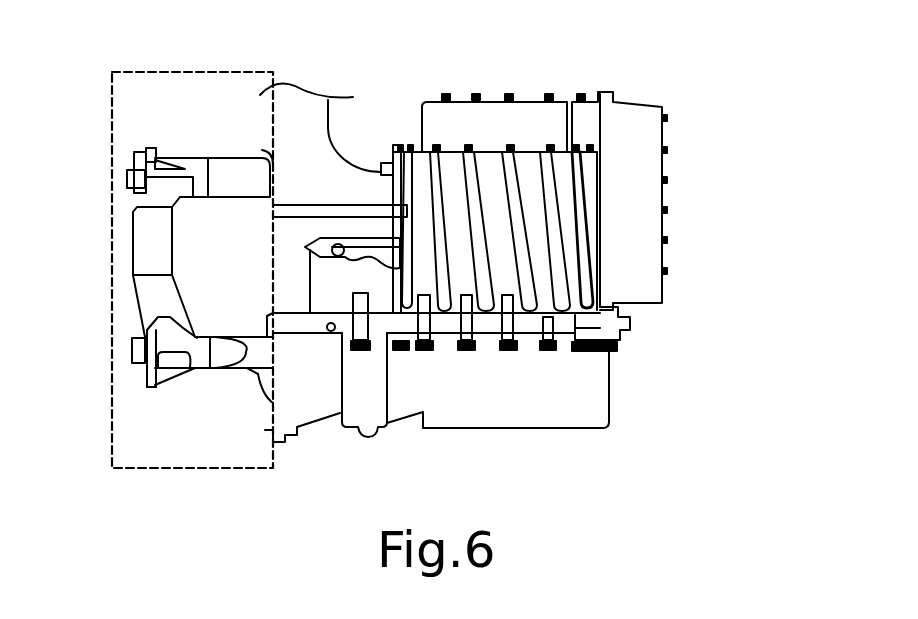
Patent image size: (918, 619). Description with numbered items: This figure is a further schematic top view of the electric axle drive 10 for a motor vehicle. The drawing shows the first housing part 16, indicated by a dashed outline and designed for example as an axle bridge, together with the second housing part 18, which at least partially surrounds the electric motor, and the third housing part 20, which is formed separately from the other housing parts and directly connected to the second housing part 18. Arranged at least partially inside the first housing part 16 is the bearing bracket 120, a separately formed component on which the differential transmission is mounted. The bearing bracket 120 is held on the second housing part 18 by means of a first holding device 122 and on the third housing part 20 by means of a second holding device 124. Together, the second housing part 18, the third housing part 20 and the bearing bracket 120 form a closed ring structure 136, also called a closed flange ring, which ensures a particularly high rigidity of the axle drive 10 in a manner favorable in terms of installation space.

The electric axle drive 10 is at (662, 78).
The first housing part 16 is at (185, 72).
The second housing part 18 is at (577, 262).
The third housing part 20 is at (612, 382).
The bearing bracket 120 is at (147, 239).
The first holding device 122 is at (210, 153).
The second holding device 124 is at (218, 378).
The closed ring structure 136 is at (215, 333).